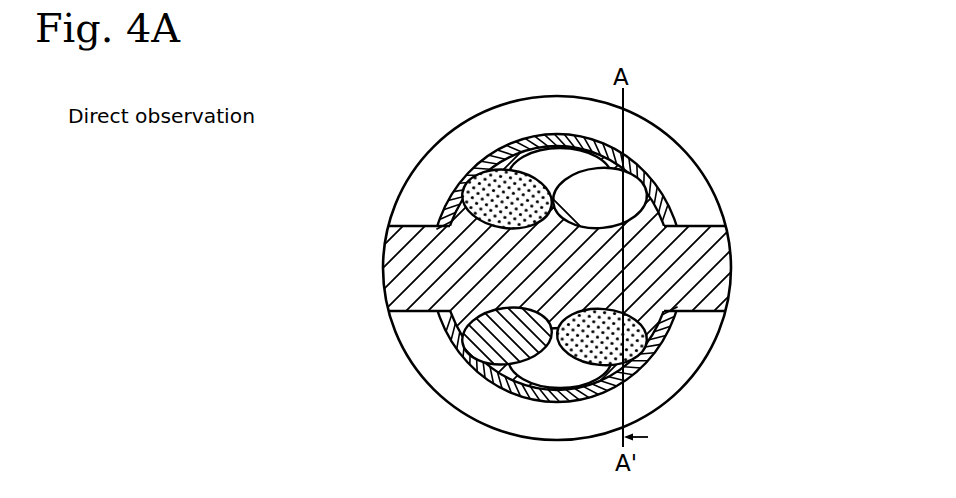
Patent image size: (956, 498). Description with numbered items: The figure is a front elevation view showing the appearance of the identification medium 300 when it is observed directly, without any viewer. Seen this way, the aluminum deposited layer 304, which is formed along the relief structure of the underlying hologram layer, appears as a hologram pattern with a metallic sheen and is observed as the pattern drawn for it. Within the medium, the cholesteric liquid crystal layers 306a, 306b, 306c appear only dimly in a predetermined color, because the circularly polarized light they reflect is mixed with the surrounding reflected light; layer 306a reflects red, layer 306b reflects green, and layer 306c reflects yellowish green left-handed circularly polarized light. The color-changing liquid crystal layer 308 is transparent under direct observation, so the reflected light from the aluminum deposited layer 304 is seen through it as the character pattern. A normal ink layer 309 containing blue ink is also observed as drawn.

The identification medium 300 is at (692, 148).
The aluminum deposited layer 304 is at (695, 340).
The cholesteric liquid crystal layer 306a is at (648, 345).
The cholesteric liquid crystal layer 306b is at (642, 206).
The cholesteric liquid crystal layer 306c is at (537, 165).
The color-changing liquid crystal layer 308 is at (675, 214).
The normal ink layer 309 is at (716, 274).